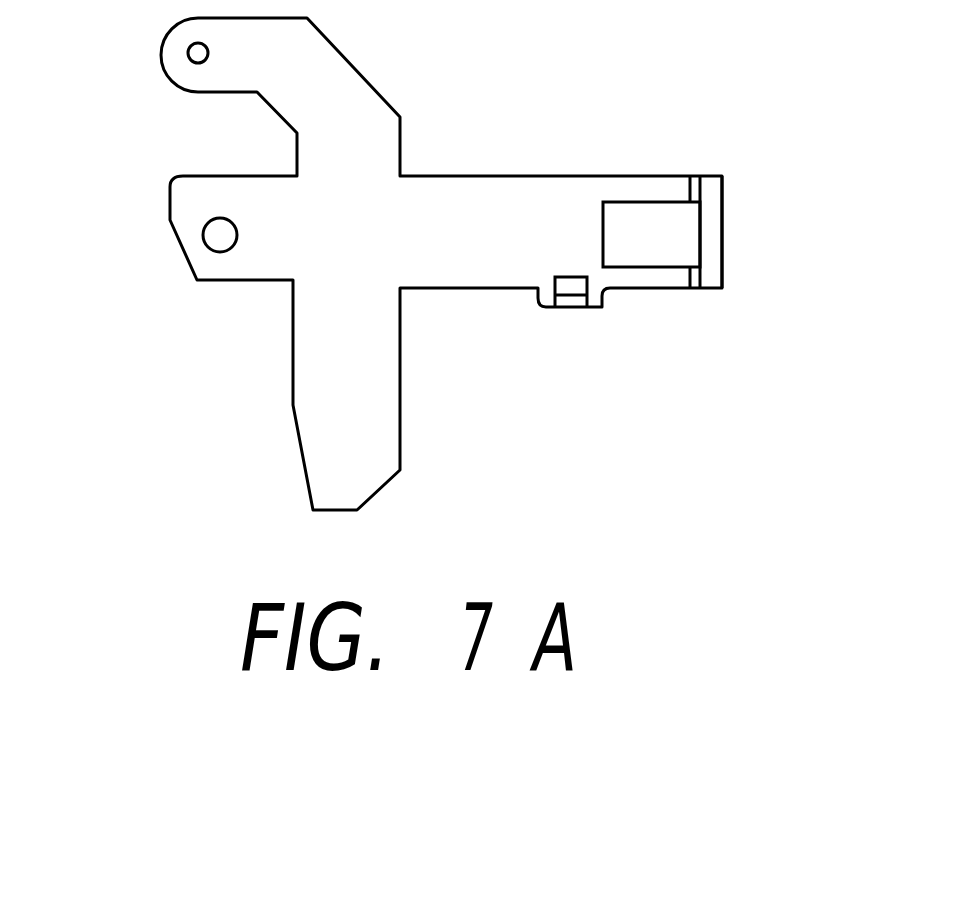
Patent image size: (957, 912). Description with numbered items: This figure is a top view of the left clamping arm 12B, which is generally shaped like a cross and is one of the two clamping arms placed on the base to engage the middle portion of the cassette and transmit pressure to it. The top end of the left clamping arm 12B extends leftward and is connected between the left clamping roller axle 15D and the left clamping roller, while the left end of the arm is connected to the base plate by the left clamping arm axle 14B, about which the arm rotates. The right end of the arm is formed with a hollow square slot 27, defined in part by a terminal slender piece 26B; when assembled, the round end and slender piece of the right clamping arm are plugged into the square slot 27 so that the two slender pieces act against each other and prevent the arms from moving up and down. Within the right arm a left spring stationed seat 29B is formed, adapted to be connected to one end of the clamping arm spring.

The left clamping arm 12B is at (358, 87).
The left clamping roller axle 15D is at (188, 50).
The left clamping arm axle 14B is at (203, 232).
The hollow square slot 27 is at (660, 213).
The terminal slender piece 26B is at (715, 229).
The left spring stationed seat 29B is at (570, 290).